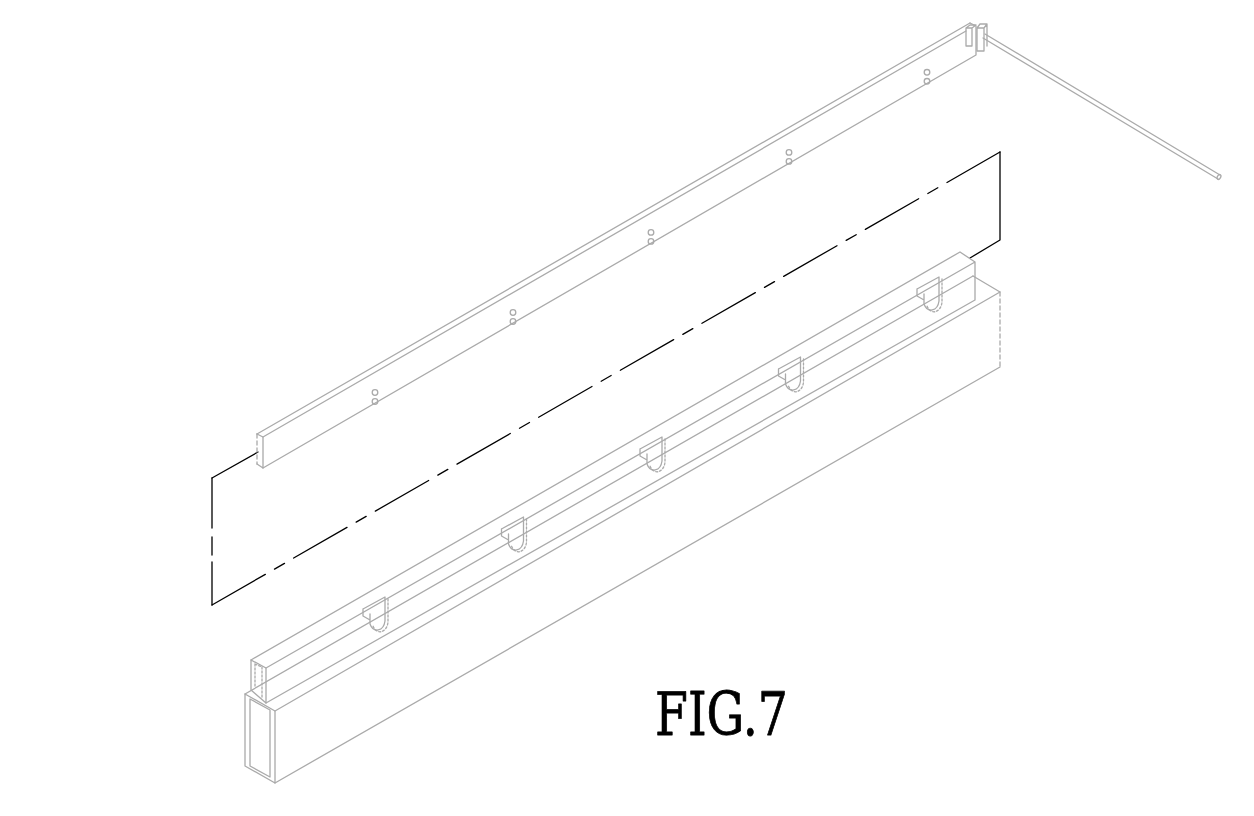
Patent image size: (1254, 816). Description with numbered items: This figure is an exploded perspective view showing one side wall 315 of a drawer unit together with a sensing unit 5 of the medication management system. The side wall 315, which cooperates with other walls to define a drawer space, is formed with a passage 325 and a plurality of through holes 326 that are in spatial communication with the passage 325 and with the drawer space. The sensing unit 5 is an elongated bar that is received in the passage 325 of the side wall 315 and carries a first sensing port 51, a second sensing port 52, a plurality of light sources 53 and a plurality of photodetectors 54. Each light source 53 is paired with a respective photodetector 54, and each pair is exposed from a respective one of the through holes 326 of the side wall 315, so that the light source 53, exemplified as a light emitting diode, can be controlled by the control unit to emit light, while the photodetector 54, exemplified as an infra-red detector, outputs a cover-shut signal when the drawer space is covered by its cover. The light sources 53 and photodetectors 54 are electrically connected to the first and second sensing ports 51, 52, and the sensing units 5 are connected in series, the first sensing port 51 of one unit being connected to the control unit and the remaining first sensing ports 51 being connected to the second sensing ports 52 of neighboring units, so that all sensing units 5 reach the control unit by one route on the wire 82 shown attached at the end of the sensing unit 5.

The sensing unit 5 is at (654, 192).
The first sensing port 51 is at (963, 30).
The second sensing port 52 is at (986, 35).
The light source 53 is at (512, 308).
The photodetector 54 is at (512, 323).
The wire 82 is at (1094, 104).
The side wall 315 is at (400, 672).
The passage 325 is at (260, 680).
The through hole 326 is at (515, 537).